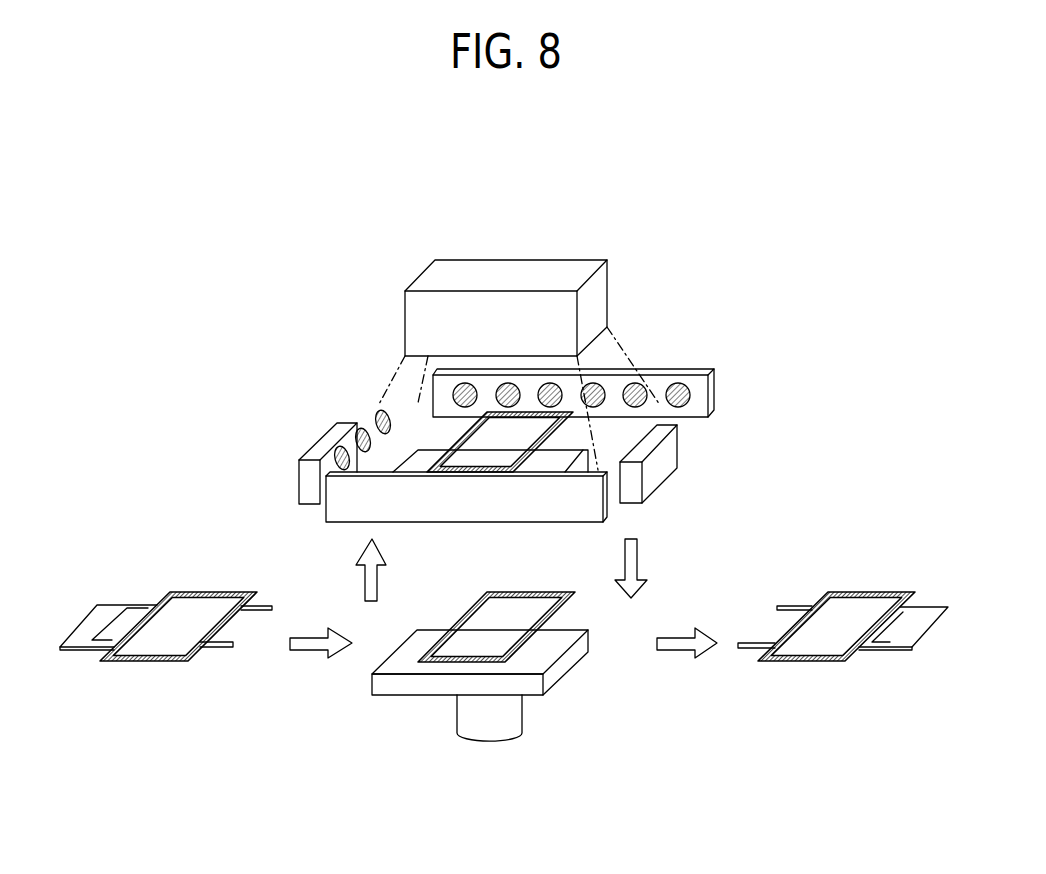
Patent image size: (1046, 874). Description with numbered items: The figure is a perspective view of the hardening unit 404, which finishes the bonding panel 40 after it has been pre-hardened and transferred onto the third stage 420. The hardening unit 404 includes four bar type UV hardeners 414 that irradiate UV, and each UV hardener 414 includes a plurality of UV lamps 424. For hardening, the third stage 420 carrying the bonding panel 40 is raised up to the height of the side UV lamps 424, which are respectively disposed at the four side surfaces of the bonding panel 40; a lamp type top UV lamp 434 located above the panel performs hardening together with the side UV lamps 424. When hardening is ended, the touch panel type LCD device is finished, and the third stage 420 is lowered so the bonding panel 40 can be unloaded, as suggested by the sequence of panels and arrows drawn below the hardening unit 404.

The hardening unit 404 is at (506, 204).
The lamp type top UV lamp 434 is at (423, 322).
The UV lamps 424 is at (353, 442).
The bar type UV hardener 414 is at (310, 480).
The bonding panel 40 is at (468, 430).
The third stage 420 is at (395, 685).